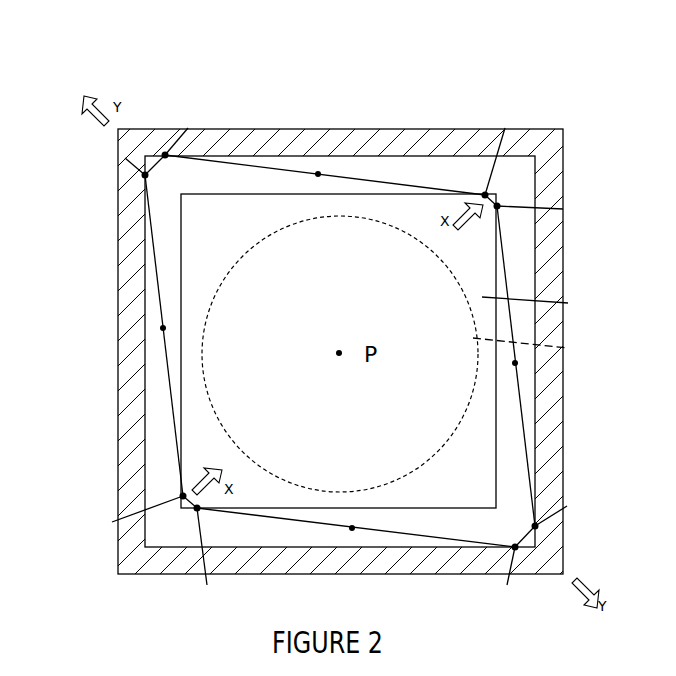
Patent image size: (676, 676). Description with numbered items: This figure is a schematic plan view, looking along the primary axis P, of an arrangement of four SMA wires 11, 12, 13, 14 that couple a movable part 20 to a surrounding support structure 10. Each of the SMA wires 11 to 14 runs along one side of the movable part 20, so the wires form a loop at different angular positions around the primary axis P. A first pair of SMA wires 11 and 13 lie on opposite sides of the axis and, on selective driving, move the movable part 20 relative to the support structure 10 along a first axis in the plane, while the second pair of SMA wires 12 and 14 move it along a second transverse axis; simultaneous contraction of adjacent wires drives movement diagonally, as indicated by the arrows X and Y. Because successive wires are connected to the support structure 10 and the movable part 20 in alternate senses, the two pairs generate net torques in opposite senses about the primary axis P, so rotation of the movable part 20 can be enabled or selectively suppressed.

The support structure 10 is at (548, 243).
The SMA wire 11 is at (387, 177).
The SMA wire 12 is at (552, 401).
The SMA wire 13 is at (390, 533).
The SMA wire 14 is at (170, 390).
The movable part 20 is at (423, 210).